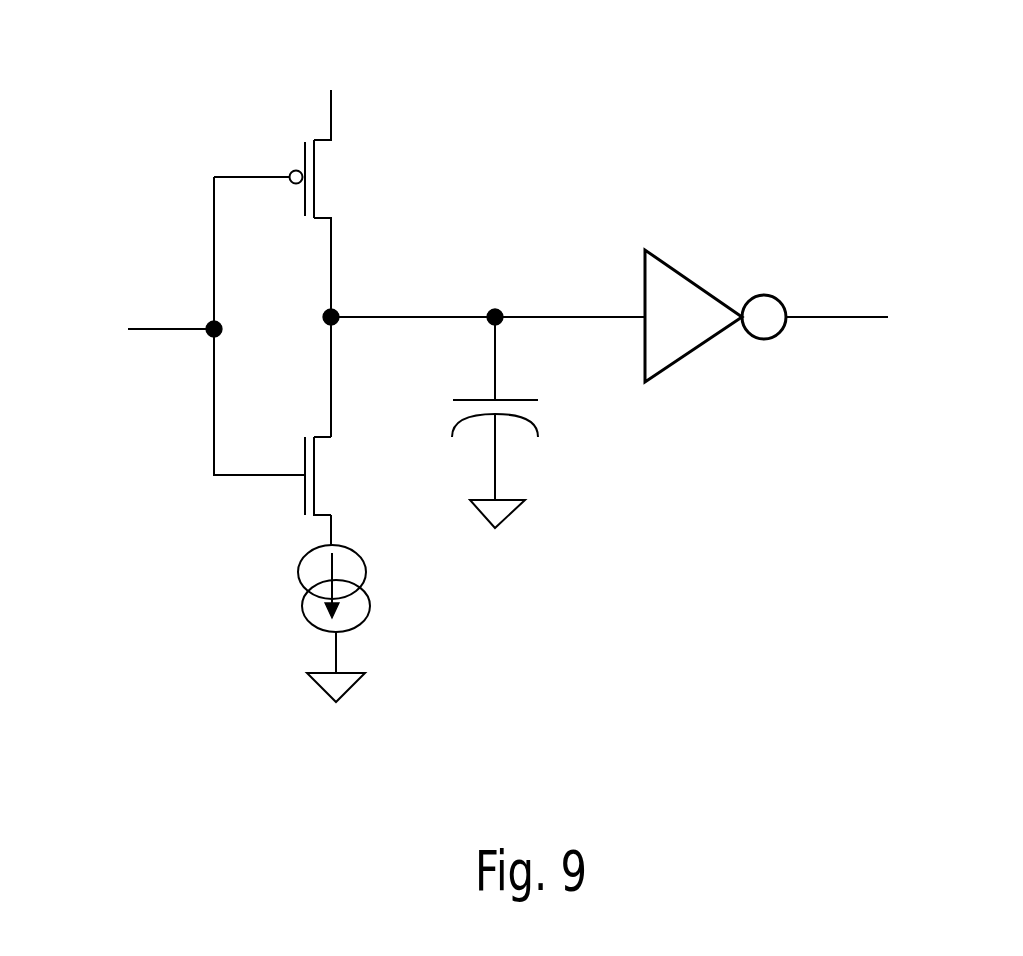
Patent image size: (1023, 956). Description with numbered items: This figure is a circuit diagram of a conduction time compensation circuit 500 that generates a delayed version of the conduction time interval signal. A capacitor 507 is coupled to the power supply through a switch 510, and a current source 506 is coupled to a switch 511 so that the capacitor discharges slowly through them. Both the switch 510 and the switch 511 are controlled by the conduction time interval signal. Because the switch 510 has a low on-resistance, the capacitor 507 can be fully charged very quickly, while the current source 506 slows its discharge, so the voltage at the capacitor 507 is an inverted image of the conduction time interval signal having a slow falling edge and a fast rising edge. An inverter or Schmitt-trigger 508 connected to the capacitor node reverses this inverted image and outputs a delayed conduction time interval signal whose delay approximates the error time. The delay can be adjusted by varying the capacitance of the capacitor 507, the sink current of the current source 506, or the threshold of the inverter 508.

The conduction time compensation circuit 500 is at (776, 98).
The current source 506 is at (372, 592).
The capacitor 507 is at (545, 425).
The inverter or Schmitt-trigger 508 is at (698, 357).
The switch 510 is at (352, 180).
The switch 511 is at (351, 477).